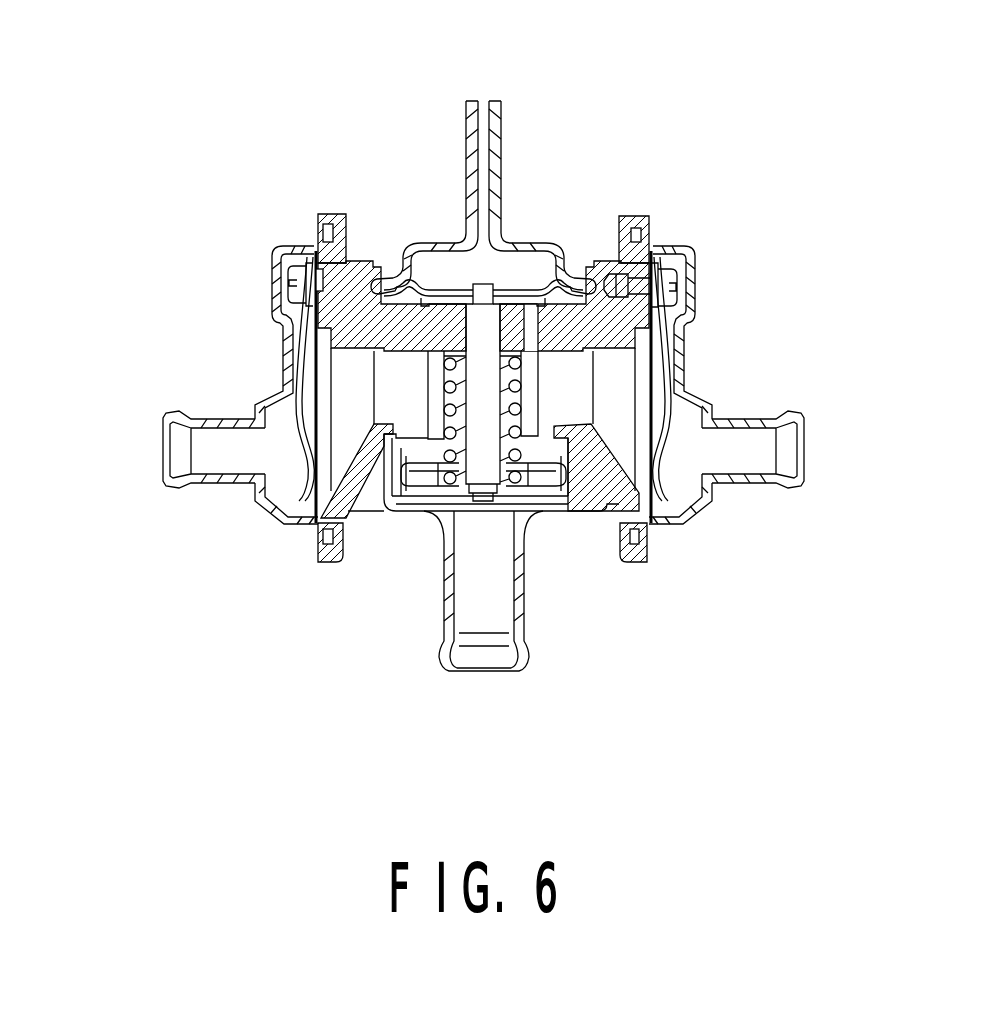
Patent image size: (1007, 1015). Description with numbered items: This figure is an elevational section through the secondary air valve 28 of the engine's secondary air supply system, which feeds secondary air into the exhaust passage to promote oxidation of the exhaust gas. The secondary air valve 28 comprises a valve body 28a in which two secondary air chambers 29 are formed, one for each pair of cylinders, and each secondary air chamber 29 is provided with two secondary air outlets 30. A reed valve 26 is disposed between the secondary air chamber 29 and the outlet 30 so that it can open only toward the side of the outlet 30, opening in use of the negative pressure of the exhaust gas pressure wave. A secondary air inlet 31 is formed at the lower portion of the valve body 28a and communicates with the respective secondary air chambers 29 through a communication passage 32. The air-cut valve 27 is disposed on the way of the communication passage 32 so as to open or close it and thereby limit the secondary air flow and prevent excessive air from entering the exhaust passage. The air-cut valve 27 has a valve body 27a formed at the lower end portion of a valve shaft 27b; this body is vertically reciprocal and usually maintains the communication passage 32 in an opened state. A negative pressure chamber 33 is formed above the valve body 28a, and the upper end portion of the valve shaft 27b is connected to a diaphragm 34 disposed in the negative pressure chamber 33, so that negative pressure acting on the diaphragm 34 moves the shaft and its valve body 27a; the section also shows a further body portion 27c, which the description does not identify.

The reed valve 26 is at (313, 378).
The air-cut valve 27 is at (433, 400).
The valve body 27a is at (547, 510).
The valve shaft 27b is at (480, 457).
The body chamber portion 27c is at (522, 398).
The secondary air valve 28 is at (645, 126).
The valve body 28a is at (618, 556).
The secondary air chamber 29 is at (387, 365).
The secondary air outlet 30 is at (220, 480).
The secondary air inlet 31 is at (444, 650).
The communication passage 32 is at (440, 434).
The negative pressure chamber 33 is at (517, 273).
The diaphragm 34 is at (446, 300).